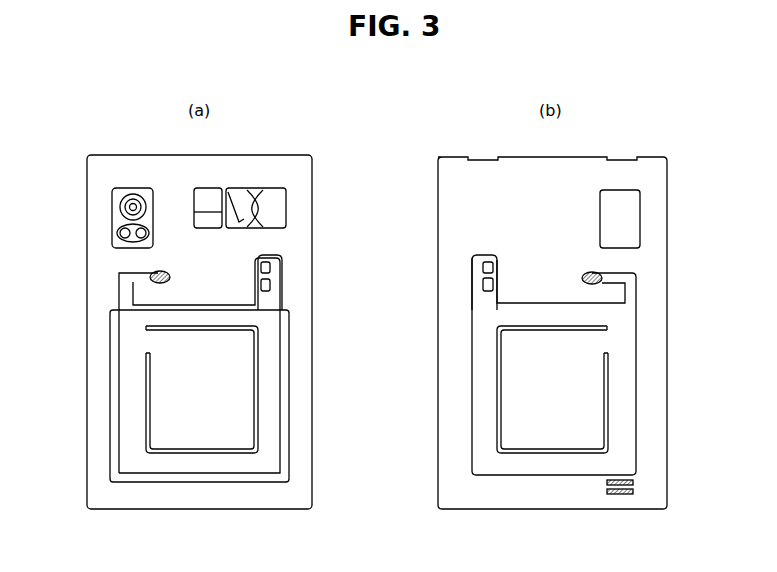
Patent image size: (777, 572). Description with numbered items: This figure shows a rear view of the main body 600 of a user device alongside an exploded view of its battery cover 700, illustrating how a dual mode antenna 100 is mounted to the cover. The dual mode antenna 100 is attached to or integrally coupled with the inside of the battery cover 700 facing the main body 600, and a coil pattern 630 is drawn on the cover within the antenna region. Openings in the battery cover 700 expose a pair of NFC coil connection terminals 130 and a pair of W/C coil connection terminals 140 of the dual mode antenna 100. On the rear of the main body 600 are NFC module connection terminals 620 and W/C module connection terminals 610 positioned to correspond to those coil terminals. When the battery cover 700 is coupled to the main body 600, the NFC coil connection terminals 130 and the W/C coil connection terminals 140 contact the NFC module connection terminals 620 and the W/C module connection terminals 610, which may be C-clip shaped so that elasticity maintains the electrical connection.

The main body 600 is at (198, 509).
The W/C module connection terminals 610 is at (152, 273).
The NFC module connection terminals 620 is at (270, 285).
The antenna coil pattern 630 is at (289, 395).
The battery cover 700 is at (553, 509).
The dual mode antenna 100 is at (636, 373).
The NFC coil connection terminals 130 is at (484, 285).
The W/C coil connection terminals 140 is at (598, 273).